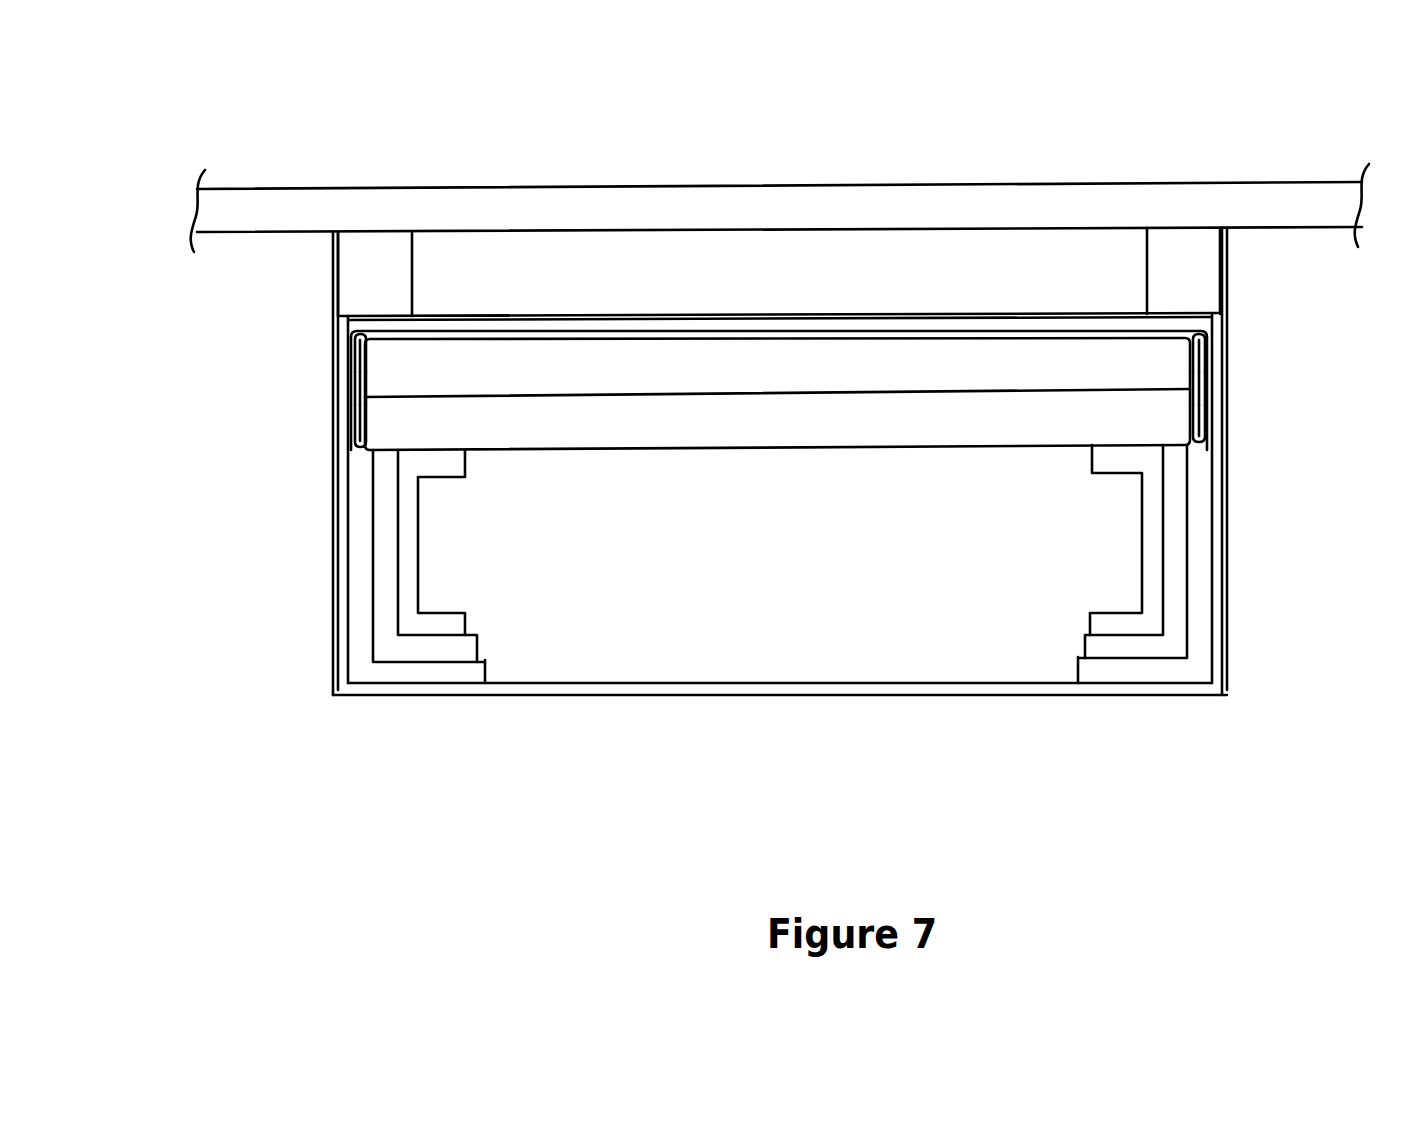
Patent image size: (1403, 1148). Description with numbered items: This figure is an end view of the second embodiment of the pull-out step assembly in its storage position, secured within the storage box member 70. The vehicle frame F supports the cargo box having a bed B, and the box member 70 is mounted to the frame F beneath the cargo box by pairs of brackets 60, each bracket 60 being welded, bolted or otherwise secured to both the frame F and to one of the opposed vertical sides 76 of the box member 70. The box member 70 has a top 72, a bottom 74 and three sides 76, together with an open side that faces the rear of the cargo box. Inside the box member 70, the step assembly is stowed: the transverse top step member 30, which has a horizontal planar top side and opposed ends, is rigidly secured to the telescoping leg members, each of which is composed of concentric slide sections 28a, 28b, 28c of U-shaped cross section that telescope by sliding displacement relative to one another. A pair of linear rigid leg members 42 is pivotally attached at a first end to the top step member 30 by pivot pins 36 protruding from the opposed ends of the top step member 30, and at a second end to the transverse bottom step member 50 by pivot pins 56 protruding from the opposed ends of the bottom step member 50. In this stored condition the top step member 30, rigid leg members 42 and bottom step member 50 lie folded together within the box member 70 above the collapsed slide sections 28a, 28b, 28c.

The bed B is at (1048, 197).
The vehicle frame F is at (360, 250).
The storage box member 70 is at (764, 544).
The bracket 60 is at (330, 268).
The side 76 is at (345, 577).
The bottom 74 is at (750, 688).
The top 72 is at (740, 321).
The transverse bottom step member 50 is at (868, 362).
The transverse top step member 30 is at (785, 423).
The pivot pin 36 is at (355, 362).
The rigid leg member 42 is at (360, 393).
The pivot pin 56 is at (358, 417).
The concentric slide section 28a is at (487, 672).
The concentric slide section 28b is at (483, 646).
The concentric slide section 28c is at (468, 620).